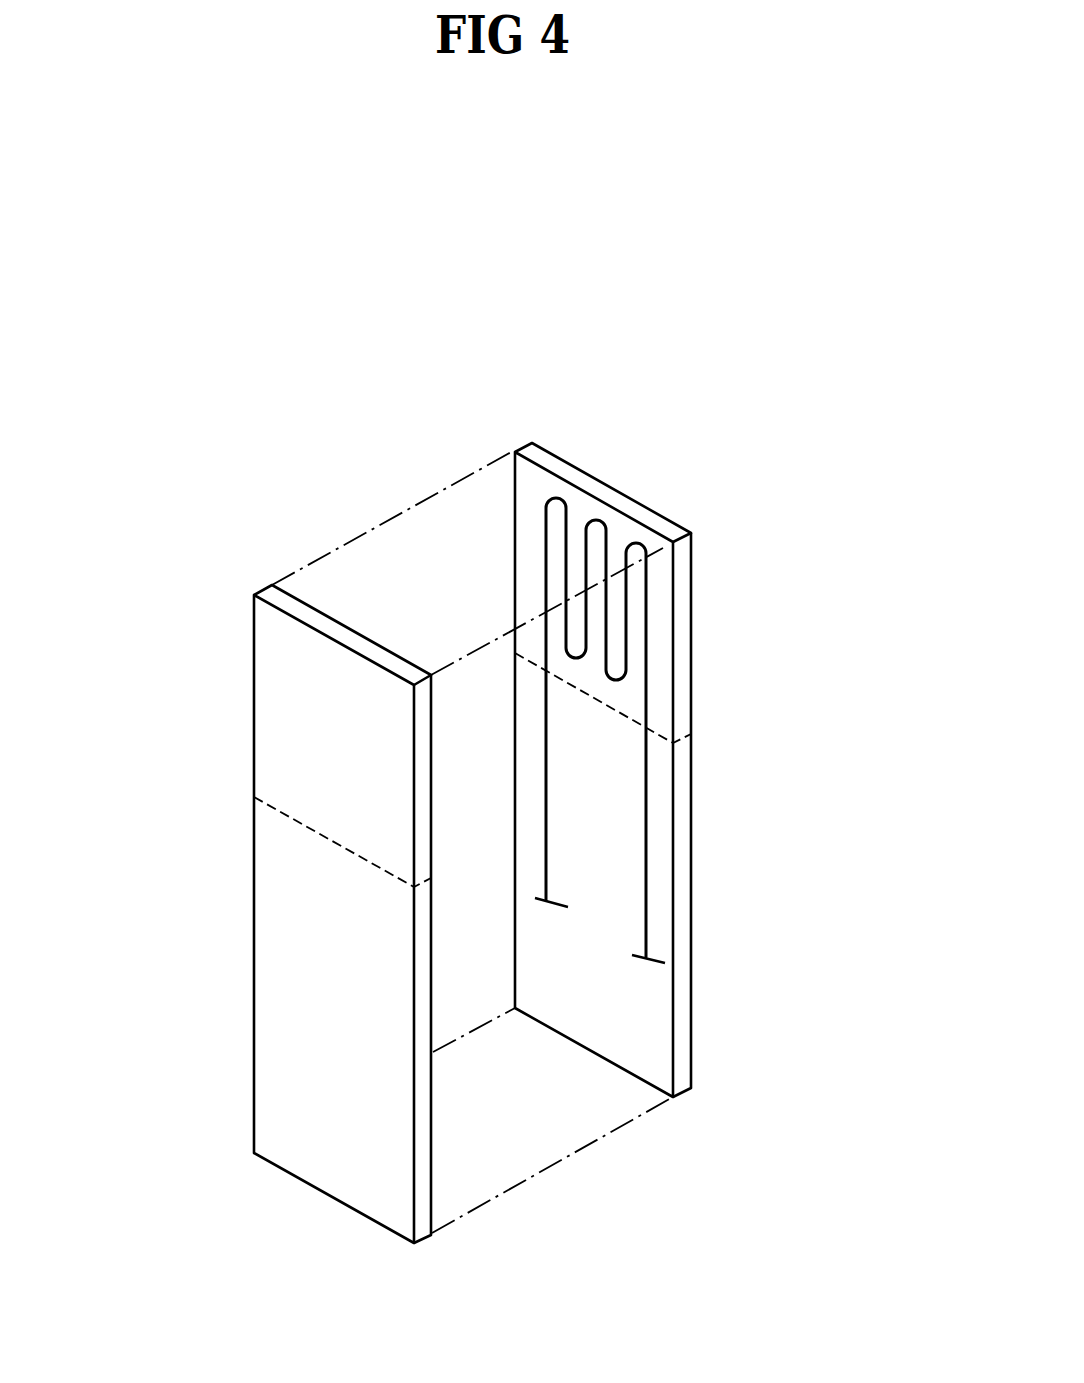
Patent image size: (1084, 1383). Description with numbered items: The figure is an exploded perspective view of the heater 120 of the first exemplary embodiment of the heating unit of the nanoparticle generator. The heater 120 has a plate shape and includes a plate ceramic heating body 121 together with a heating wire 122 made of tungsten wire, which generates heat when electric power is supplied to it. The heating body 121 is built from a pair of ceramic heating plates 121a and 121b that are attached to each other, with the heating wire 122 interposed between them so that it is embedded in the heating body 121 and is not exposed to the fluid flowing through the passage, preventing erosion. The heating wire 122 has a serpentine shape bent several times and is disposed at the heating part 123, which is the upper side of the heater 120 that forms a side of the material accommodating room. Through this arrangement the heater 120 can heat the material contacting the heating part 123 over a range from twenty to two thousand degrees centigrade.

The heater 120 is at (494, 832).
The heating body 121 is at (494, 892).
The ceramic heating plate 121a is at (350, 944).
The ceramic heating plate 121b is at (690, 800).
The heating wire 122 is at (647, 763).
The heating part 123 is at (278, 690).